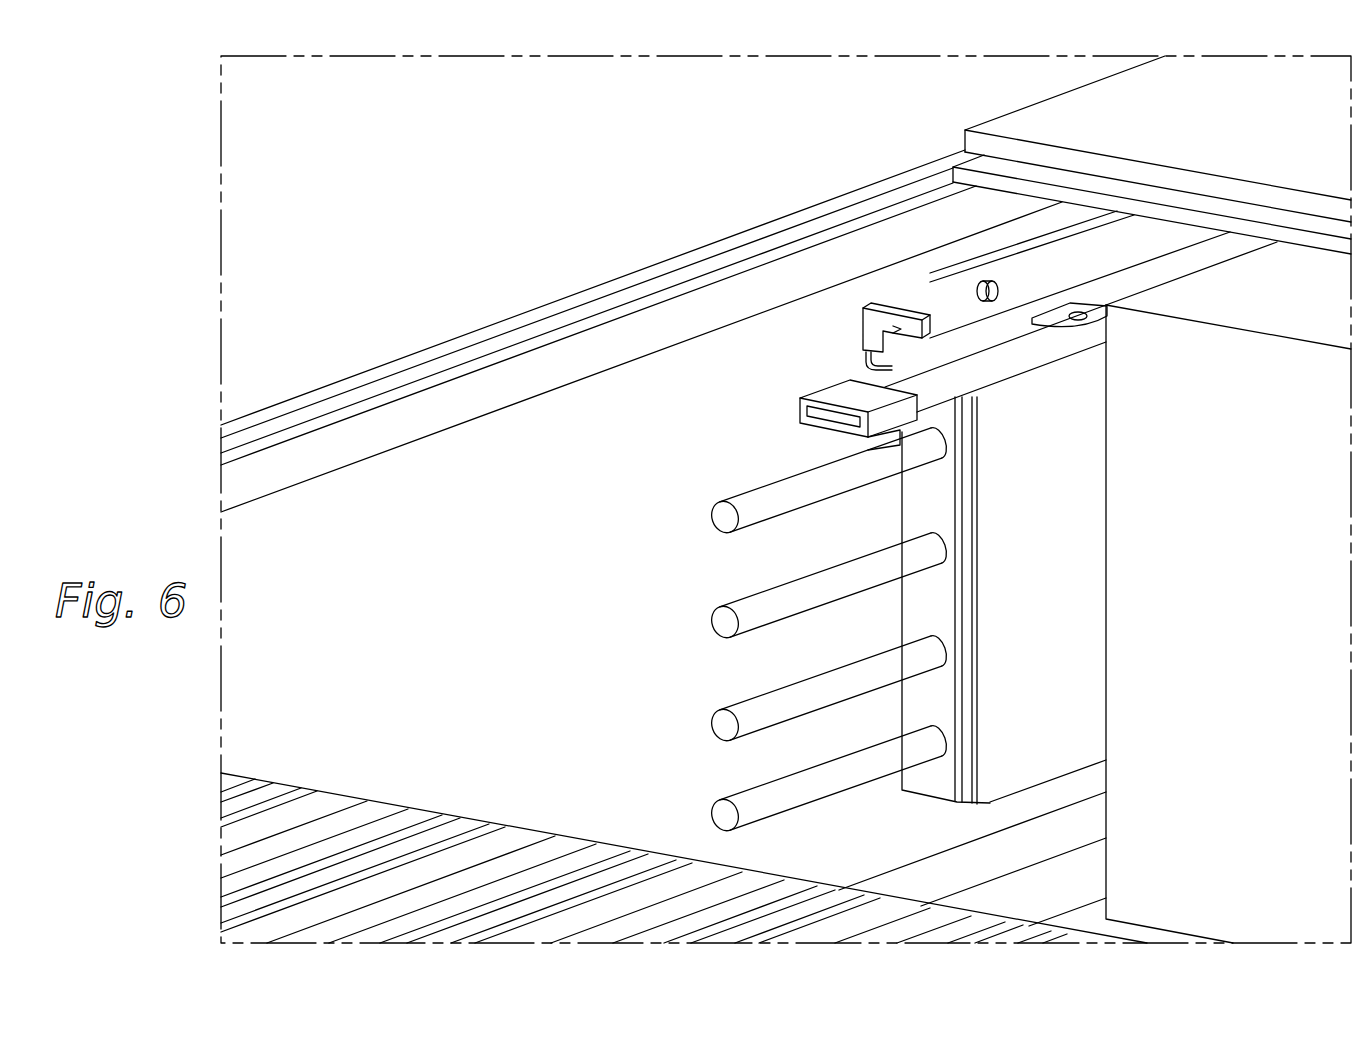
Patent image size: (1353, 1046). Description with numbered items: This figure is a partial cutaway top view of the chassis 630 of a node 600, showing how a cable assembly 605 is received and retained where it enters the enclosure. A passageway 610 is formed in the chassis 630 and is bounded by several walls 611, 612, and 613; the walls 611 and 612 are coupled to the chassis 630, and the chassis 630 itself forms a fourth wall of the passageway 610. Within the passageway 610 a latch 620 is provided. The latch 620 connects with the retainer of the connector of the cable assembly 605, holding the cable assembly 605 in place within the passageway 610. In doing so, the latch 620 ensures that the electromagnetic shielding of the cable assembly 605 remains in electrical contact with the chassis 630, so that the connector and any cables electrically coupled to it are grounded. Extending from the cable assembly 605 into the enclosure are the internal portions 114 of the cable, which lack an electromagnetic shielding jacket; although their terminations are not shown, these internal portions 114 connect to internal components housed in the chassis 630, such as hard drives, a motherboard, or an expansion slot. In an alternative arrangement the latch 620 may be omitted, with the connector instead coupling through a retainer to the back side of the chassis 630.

The node 600 is at (392, 148).
The passageway 610 is at (945, 305).
The wall 612 is at (1157, 273).
The chassis 630 is at (597, 284).
The cable assembly 605 is at (713, 463).
The latch 620 is at (1003, 350).
The internal portion 114 is at (723, 620).
The wall 613 is at (1078, 607).
The wall 611 is at (987, 800).